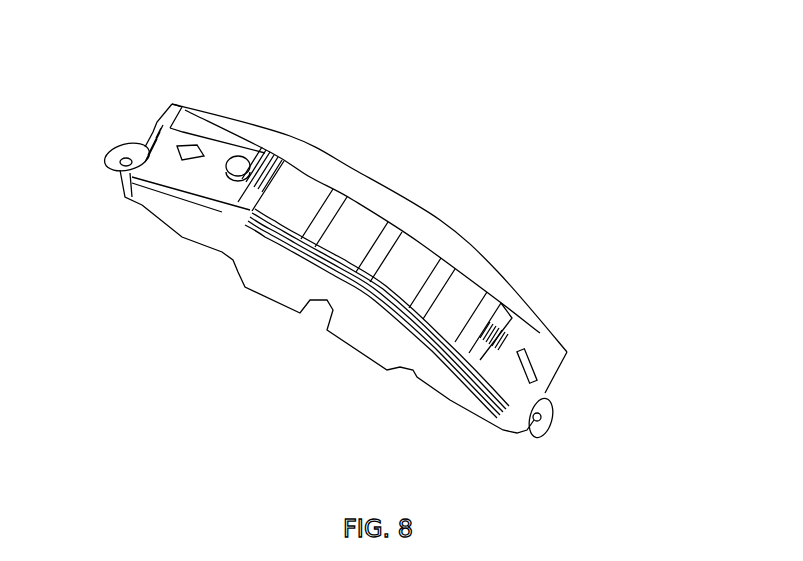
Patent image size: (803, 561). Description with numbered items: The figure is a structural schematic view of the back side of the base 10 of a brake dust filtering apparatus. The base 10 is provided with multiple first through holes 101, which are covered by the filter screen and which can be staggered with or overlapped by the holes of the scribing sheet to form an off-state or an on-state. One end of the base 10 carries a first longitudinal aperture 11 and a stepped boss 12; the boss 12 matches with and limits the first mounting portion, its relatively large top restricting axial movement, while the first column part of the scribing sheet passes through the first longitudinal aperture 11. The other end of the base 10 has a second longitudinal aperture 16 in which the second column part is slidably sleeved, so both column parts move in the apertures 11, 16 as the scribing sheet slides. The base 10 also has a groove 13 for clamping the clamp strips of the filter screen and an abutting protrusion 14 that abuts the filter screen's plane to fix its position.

The base 10 is at (98, 72).
The first longitudinal aperture 11 is at (197, 156).
The stepped boss 12 is at (240, 177).
The groove 13 is at (245, 197).
The abutting protrusion 14 is at (507, 328).
The second longitudinal aperture 16 is at (527, 362).
The first through holes 101 is at (342, 215).